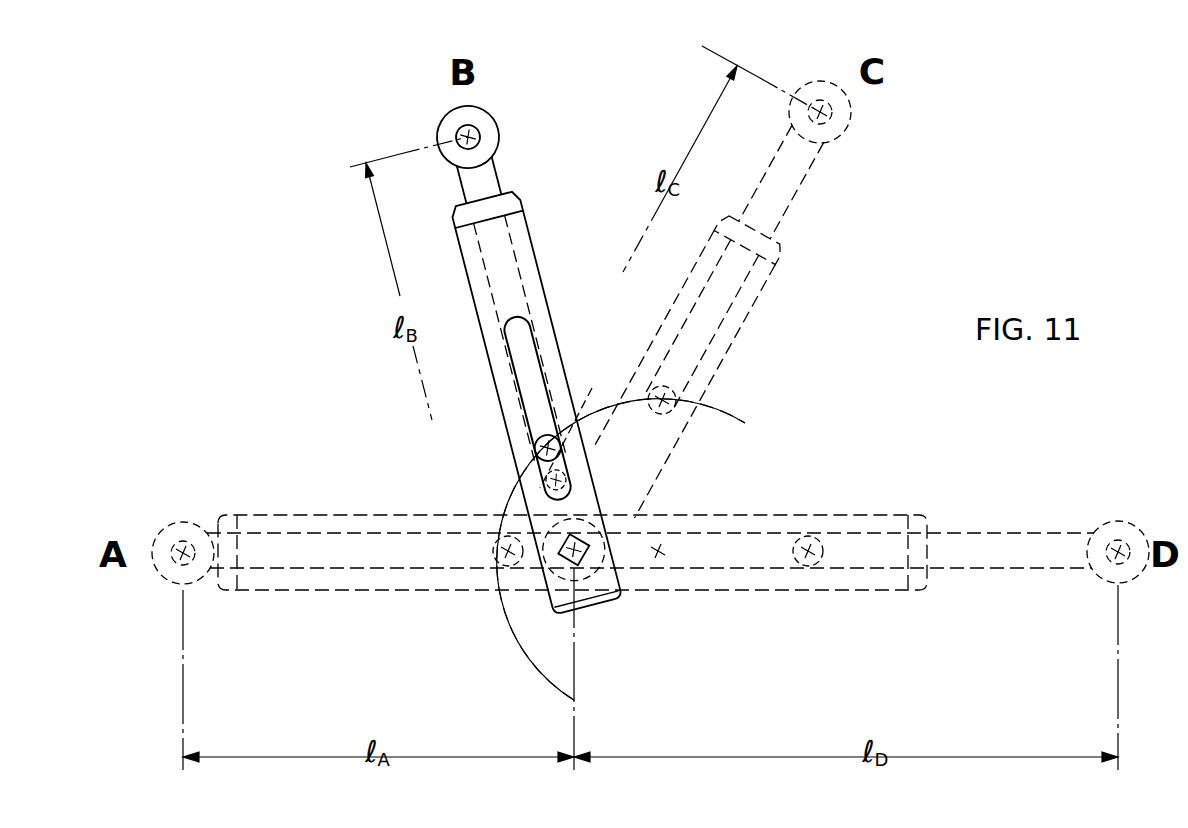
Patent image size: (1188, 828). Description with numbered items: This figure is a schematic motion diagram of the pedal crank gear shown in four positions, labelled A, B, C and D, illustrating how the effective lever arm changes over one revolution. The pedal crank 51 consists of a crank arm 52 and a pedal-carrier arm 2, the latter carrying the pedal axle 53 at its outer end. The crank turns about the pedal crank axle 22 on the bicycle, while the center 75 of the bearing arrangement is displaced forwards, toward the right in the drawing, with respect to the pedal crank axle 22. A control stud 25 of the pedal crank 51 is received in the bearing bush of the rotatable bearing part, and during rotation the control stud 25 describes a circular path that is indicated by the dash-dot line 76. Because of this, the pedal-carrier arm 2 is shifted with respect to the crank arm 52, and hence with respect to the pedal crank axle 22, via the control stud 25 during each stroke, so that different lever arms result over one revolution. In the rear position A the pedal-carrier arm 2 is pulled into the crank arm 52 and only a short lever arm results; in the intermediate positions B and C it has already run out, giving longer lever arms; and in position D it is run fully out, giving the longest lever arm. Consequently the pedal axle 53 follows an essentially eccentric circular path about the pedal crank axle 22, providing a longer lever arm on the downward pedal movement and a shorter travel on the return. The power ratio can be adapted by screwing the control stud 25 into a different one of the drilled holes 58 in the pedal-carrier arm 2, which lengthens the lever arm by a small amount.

The pedal-carrier arm 2 is at (526, 370).
The pedal axle 53 is at (487, 137).
The crank arm 52 is at (531, 277).
The pedal crank 51 is at (505, 447).
The control stud 25 is at (538, 453).
The drilled hole 58 is at (575, 426).
The pedal crank axle 22 is at (572, 552).
The center of the bearing arrangement 75 is at (660, 552).
The circular path 76 is at (748, 422).